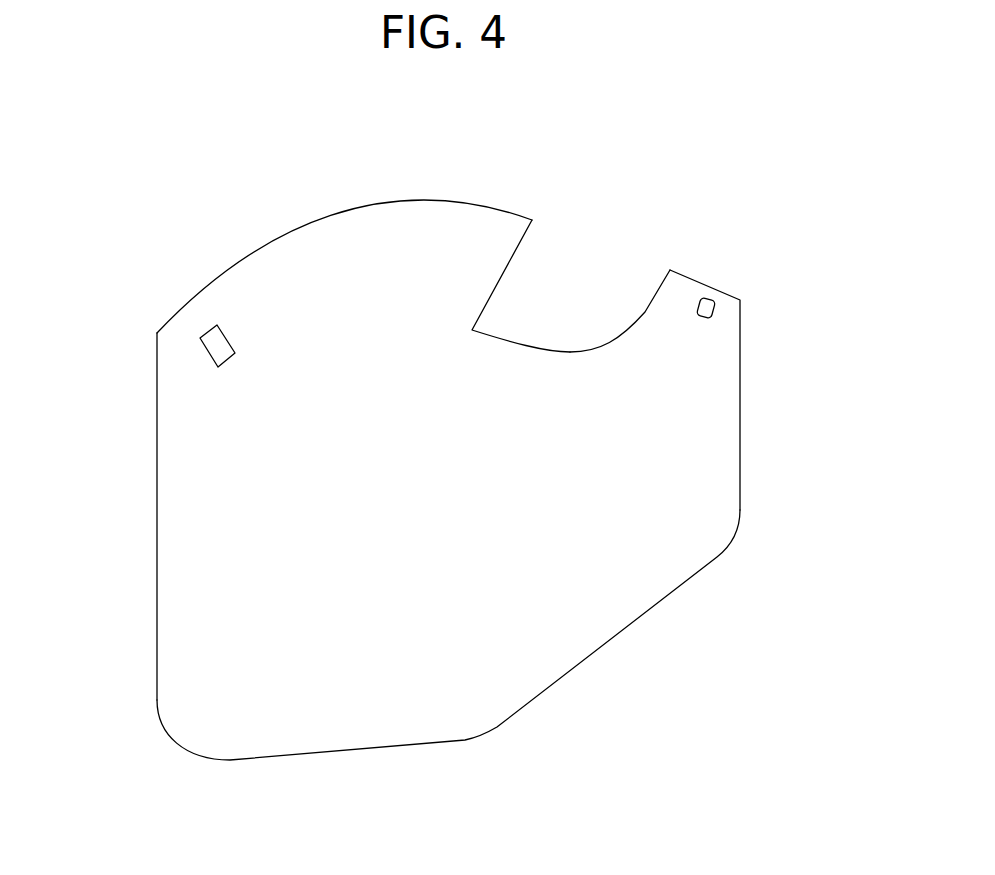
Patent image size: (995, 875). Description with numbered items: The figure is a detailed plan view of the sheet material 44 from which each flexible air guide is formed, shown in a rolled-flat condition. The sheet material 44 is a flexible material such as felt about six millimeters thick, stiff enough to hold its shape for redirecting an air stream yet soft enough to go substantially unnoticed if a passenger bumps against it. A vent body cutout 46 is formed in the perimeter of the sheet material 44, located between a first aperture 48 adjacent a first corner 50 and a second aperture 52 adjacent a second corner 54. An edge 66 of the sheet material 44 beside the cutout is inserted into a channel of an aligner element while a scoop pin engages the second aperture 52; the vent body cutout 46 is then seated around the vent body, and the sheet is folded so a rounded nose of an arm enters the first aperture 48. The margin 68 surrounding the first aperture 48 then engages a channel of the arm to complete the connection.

The sheet material 44 is at (213, 192).
The vent body cutout 46 is at (542, 308).
The first aperture 48 is at (217, 350).
The first corner 50 is at (157, 333).
The second aperture 52 is at (707, 304).
The second corner 54 is at (740, 307).
The edge 66 is at (643, 313).
The margin 68 is at (214, 348).